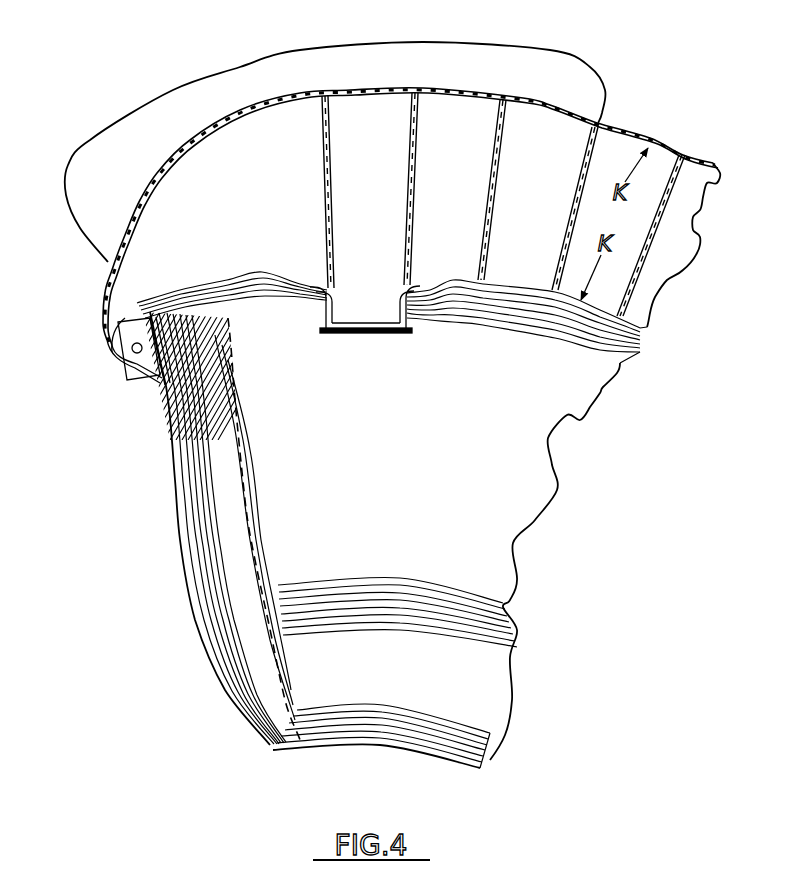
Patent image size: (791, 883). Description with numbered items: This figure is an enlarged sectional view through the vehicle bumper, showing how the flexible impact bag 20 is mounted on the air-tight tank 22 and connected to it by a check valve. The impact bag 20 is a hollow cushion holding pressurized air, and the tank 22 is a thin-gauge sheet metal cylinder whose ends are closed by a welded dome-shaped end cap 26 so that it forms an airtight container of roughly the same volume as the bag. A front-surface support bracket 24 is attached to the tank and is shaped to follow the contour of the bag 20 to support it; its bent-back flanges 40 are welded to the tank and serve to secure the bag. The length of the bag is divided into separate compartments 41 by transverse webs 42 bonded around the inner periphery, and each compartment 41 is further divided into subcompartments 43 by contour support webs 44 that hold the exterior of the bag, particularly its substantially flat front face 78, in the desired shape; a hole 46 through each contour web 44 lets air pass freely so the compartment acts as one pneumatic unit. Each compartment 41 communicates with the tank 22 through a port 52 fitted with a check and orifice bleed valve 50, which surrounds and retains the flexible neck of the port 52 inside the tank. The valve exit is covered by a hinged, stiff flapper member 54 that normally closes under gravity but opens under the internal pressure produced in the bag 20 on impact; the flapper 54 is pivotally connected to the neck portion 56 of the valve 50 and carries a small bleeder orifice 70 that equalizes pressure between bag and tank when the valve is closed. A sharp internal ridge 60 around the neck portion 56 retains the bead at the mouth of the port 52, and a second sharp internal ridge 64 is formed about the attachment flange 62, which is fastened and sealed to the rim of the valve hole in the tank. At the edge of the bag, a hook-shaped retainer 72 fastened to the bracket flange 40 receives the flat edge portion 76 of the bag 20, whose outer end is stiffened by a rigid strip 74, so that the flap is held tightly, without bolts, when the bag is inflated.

The impact bag 20 is at (190, 180).
The tank 22 is at (643, 342).
The front-surface support bracket 24 is at (232, 282).
The dome-shaped end cap 26 is at (178, 535).
The bent-back flange 40 is at (160, 384).
The compartment 41 is at (392, 47).
The transverse web 42 is at (585, 150).
The subcompartment 43 is at (523, 117).
The contour support web 44 is at (323, 135).
The hole 46 is at (325, 205).
The check and orifice bleed valve 50 is at (333, 327).
The port 52 is at (340, 293).
The flapper member 54 is at (342, 332).
The neck portion 56 is at (406, 321).
The sharp internal ridge 60 is at (337, 318).
The attachment flange 62 is at (477, 322).
The second sharp internal ridge 64 is at (320, 268).
The bleeder orifice 70 is at (363, 334).
The hook-shaped retainer 72 is at (148, 384).
The rigid strip 74 is at (132, 370).
The flat edge portion 76 is at (112, 352).
The flat front face 78 is at (547, 102).